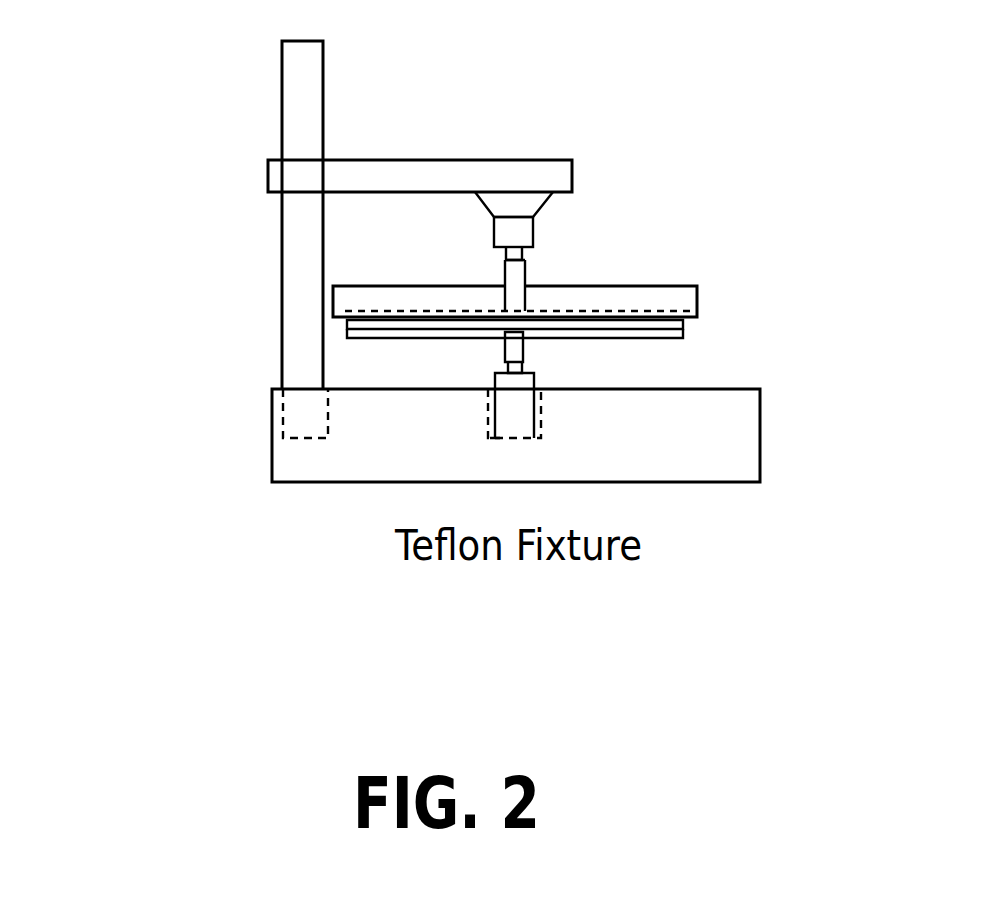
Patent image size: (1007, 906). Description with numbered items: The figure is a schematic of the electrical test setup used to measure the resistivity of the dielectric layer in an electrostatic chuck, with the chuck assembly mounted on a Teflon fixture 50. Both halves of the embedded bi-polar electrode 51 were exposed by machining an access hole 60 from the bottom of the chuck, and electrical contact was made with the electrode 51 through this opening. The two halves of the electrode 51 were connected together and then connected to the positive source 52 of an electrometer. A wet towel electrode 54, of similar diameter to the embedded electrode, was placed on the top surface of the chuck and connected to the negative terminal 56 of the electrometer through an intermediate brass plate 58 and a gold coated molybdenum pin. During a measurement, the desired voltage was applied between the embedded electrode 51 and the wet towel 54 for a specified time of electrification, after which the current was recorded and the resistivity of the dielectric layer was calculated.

The Teflon fixture base 50 is at (744, 472).
The bi-polar electrode 51 is at (706, 304).
The positive source 52 is at (498, 232).
The wet towel electrode 54 is at (694, 318).
The negative terminal 56 is at (507, 383).
The intermediate brass plate 58 is at (700, 333).
The access hole 60 is at (530, 274).